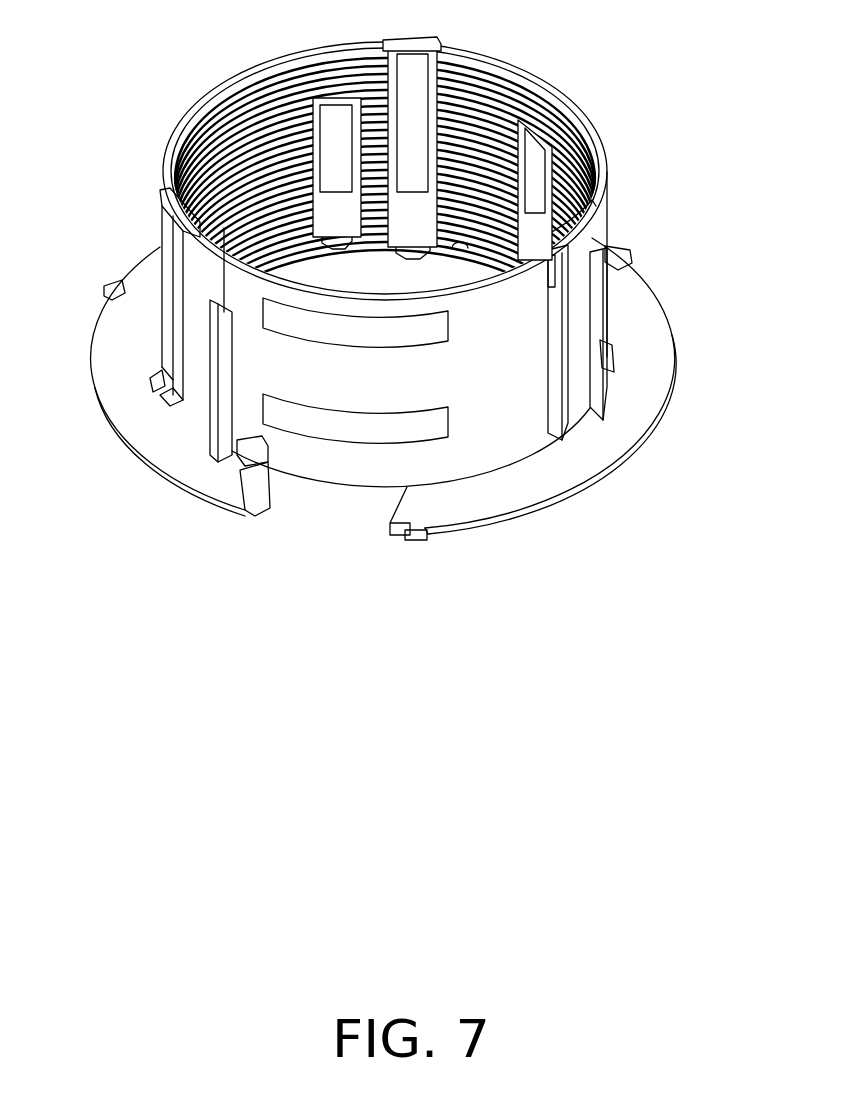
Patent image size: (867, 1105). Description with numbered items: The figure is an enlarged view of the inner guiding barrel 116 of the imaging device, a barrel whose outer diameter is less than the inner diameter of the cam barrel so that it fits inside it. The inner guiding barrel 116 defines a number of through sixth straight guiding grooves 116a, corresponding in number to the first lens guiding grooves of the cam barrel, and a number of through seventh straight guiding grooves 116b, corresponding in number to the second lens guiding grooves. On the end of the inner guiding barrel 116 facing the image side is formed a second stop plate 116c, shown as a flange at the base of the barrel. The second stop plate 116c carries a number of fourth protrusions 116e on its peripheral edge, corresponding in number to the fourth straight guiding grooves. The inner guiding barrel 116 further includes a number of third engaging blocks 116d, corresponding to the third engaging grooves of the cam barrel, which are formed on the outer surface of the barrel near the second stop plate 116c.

The inner guiding barrel 116 is at (507, 408).
The sixth straight guiding groove 116a is at (412, 102).
The seventh straight guiding groove 116b is at (335, 120).
The second stop plate 116c is at (647, 365).
The third engaging block 116d is at (245, 497).
The fourth protrusion 116e is at (115, 290).